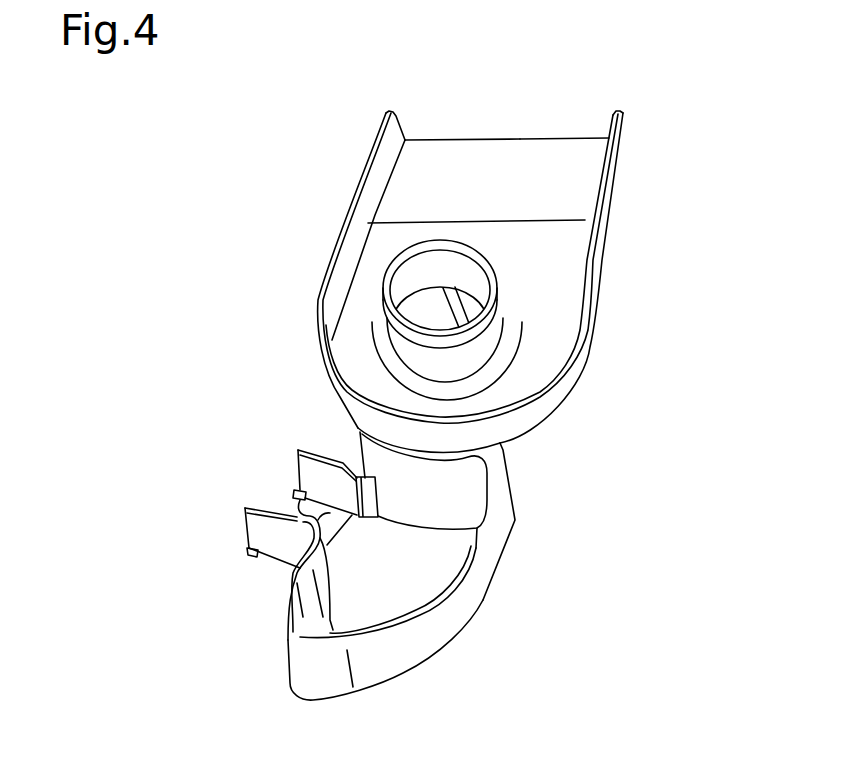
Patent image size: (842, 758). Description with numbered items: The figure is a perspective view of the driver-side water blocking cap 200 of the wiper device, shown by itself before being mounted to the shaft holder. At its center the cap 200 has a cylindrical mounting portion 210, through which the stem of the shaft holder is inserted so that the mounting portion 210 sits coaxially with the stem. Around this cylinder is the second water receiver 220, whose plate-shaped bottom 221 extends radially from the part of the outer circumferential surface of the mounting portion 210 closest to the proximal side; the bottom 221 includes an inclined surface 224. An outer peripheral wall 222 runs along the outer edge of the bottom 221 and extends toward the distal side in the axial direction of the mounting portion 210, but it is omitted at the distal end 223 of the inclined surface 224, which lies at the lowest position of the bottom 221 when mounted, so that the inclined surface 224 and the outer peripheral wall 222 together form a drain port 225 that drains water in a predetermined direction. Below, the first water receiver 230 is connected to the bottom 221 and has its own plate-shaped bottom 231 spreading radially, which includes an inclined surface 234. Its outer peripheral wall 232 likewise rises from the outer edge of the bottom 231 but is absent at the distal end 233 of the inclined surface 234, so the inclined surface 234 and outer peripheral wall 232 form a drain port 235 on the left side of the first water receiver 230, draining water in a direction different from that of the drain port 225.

The water blocking cap 200 is at (295, 273).
The mounting portion 210 is at (488, 300).
The second water receiver 220 is at (592, 348).
The bottom 221 is at (562, 230).
The outer peripheral wall 222 is at (623, 123).
The distal end 223 is at (487, 138).
The inclined surface 224 is at (548, 152).
The drain port 225 is at (442, 122).
The first water receiver 230 is at (508, 543).
The bottom 231 is at (387, 608).
The outer peripheral wall 232 is at (505, 487).
The distal end 233 is at (296, 508).
The inclined surface 234 is at (300, 528).
The drain port 235 is at (232, 525).